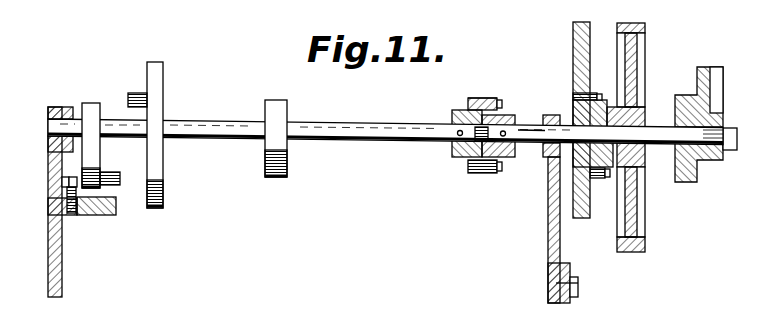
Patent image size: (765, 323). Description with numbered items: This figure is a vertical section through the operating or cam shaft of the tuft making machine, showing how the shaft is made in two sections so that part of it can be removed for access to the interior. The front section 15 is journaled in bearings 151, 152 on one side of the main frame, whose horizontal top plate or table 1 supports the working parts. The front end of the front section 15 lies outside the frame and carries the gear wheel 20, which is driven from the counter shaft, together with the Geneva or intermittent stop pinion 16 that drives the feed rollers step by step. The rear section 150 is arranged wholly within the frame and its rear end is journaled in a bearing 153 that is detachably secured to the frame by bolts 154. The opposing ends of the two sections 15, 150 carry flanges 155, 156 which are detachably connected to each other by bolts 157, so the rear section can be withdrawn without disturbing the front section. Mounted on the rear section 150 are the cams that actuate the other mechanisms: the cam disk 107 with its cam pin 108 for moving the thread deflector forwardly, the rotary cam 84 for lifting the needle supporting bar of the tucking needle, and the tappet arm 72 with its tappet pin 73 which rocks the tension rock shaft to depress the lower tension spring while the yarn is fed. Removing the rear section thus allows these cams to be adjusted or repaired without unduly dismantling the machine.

The table 1 is at (573, 29).
The front section of operating shaft 15 is at (531, 146).
The Geneva stop pinion 16 is at (690, 183).
The gear wheel 20 is at (637, 252).
The tappet arm 72 is at (90, 103).
The tappet pin 73 is at (118, 168).
The rotary cam 84 is at (277, 178).
The cam disk 107 is at (164, 205).
The cam pin 108 is at (132, 97).
The rear section of operating shaft 150 is at (223, 118).
The bearing 151 is at (556, 112).
The bearing 152 is at (606, 99).
The bearing 153 is at (60, 109).
The bolts 154 is at (68, 216).
The flange 155 is at (485, 170).
The flange 156 is at (473, 99).
The bolts 157 is at (468, 105).